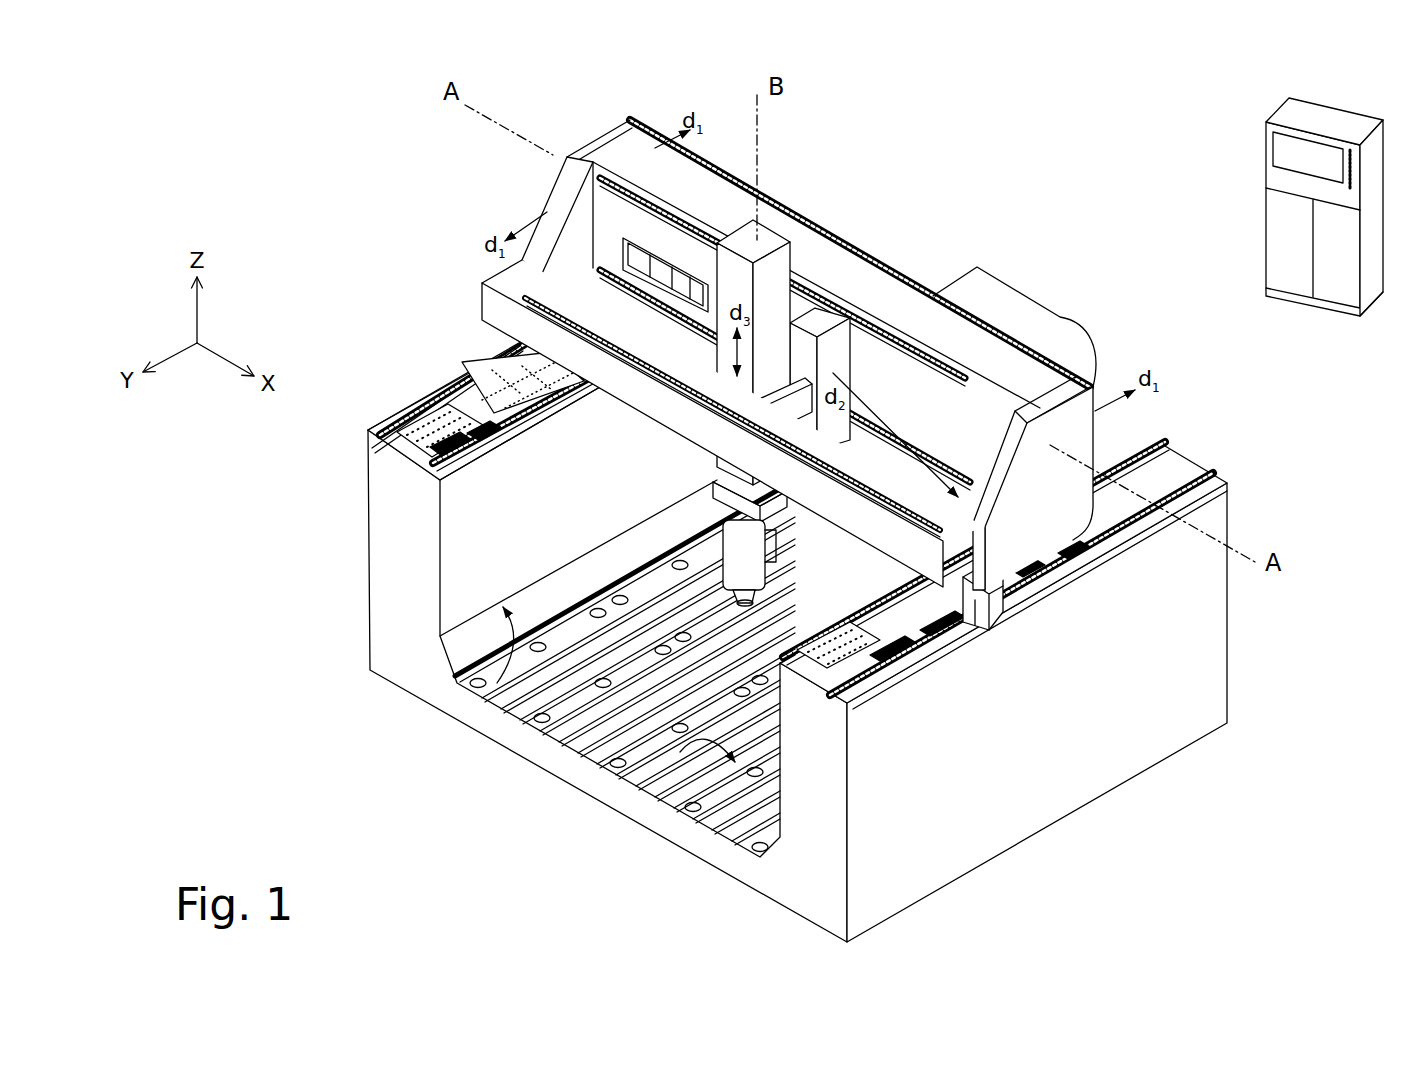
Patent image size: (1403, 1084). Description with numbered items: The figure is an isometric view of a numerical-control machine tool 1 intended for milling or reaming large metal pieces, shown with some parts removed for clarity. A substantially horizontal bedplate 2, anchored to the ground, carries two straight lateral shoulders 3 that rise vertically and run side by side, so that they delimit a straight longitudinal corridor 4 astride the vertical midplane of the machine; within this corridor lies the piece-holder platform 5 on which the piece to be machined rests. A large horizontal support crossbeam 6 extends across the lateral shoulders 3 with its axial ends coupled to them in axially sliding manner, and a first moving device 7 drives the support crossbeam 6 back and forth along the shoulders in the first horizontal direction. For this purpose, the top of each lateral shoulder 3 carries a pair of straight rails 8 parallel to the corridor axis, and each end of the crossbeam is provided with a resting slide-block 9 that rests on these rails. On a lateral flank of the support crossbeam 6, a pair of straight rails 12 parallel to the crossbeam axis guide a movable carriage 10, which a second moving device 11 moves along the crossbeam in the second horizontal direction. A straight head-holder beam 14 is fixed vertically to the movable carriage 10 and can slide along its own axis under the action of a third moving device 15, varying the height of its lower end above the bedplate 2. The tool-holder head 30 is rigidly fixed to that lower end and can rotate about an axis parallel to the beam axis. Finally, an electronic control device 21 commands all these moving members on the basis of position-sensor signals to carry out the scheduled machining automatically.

The numerical-control machine tool 1 is at (1240, 860).
The bedplate 2 is at (560, 757).
The lateral shoulders 3 is at (385, 503).
The longitudinal corridor 4 is at (497, 683).
The piece-holder platform 5 is at (680, 752).
The support crossbeam 6 is at (642, 153).
The first moving device 7 is at (468, 365).
The straight rails 8 is at (440, 413).
The resting slide-block 9 is at (1062, 574).
The movable carriage 10 is at (820, 310).
The second moving device 11 is at (625, 304).
The straight rails 12 is at (603, 267).
The head-holder beam 14 is at (742, 236).
The third moving device 15 is at (798, 236).
The electronic control device 21 is at (1318, 120).
The tool-holder head 30 is at (670, 550).